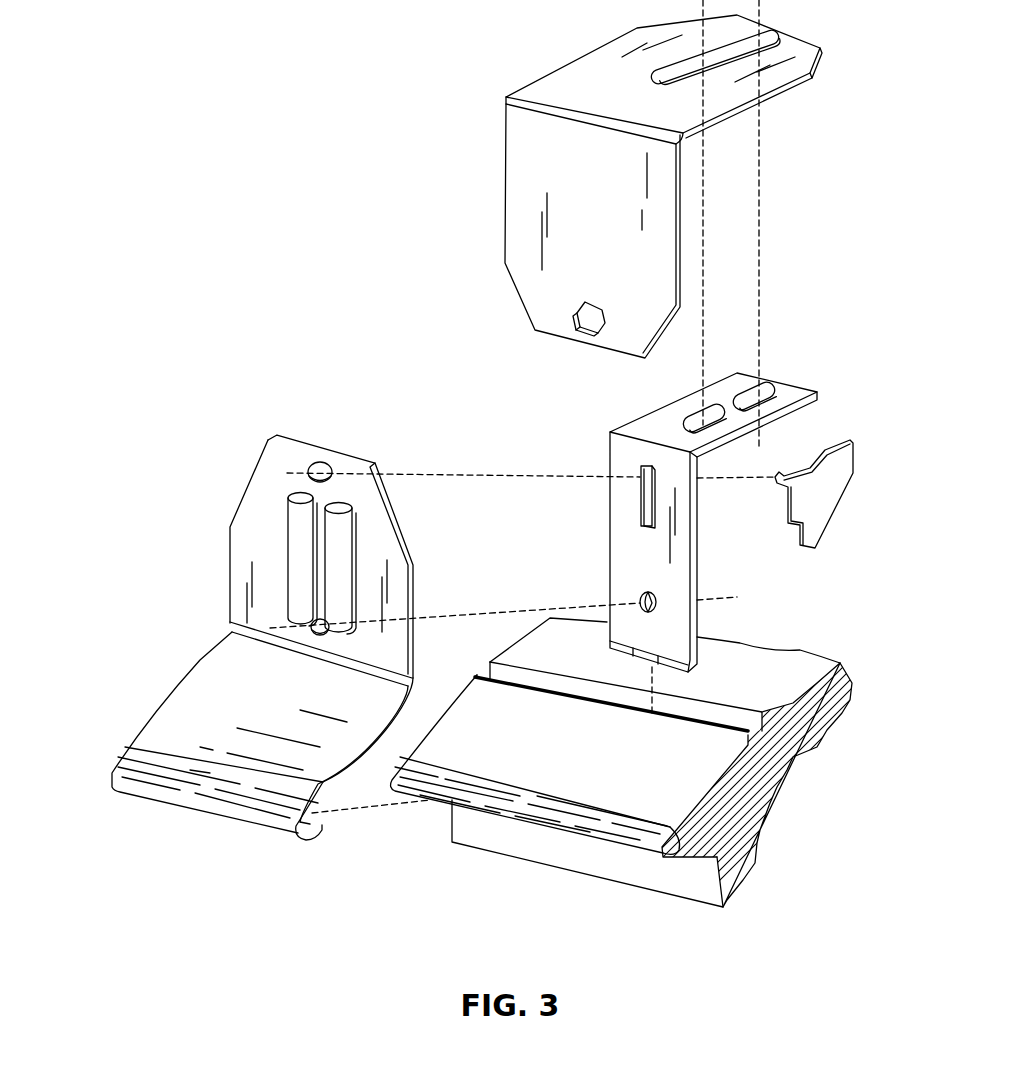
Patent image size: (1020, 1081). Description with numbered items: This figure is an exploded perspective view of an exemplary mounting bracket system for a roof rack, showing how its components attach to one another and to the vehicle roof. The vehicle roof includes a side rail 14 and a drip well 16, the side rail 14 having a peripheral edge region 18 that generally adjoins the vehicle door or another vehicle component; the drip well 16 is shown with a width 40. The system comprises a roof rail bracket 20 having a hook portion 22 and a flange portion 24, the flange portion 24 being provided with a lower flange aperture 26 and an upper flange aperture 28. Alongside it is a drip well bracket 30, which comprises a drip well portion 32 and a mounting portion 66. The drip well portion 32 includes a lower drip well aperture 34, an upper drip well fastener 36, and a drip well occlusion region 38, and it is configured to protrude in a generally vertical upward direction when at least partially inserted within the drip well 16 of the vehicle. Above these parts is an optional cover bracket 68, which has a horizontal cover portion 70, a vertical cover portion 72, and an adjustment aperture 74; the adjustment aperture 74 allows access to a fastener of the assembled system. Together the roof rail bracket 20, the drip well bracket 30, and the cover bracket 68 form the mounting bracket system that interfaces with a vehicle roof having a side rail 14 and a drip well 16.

The side rail 14 is at (577, 740).
The drip well 16 is at (476, 666).
The peripheral edge region 18 is at (550, 830).
The roof rail bracket 20 is at (227, 634).
The hook portion 22 is at (262, 736).
The flange portion 24 is at (271, 544).
The lower flange aperture 26 is at (311, 617).
The upper flange aperture 28 is at (306, 467).
The drip well bracket 30 is at (725, 545).
The drip well portion 32 is at (652, 577).
The lower drip well aperture 34 is at (657, 600).
The upper drip well fastener 36 is at (832, 509).
The drip well occlusion region 38 is at (665, 673).
The width 40 is at (705, 748).
The mounting portion 66 is at (679, 432).
The cover bracket 68 is at (734, 181).
The horizontal cover portion 70 is at (616, 90).
The vertical cover portion 72 is at (604, 217).
The adjustment aperture 74 is at (572, 295).